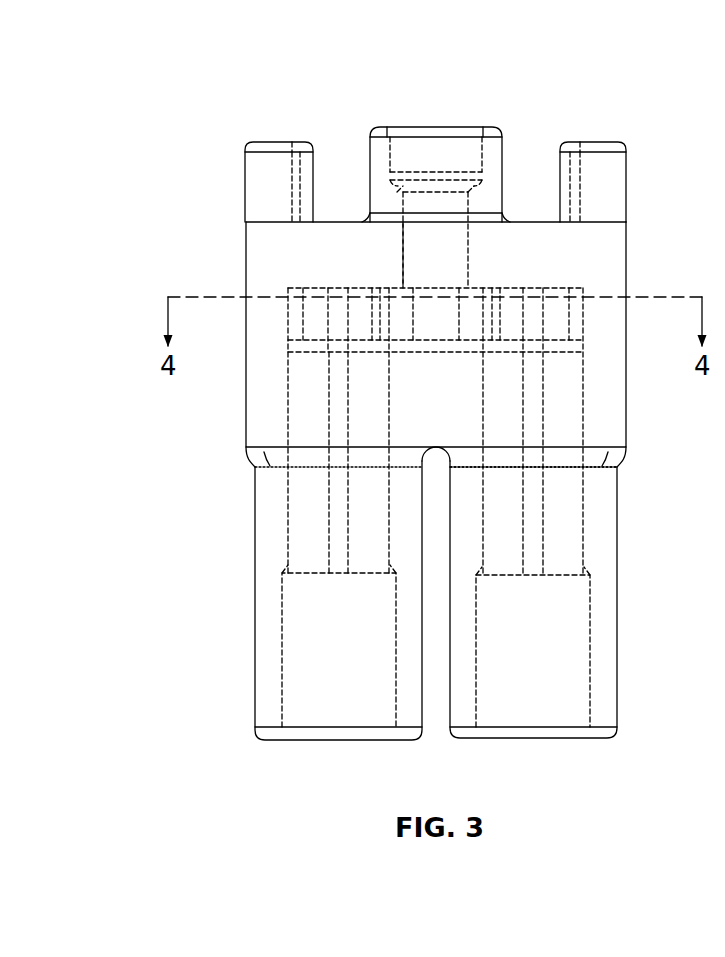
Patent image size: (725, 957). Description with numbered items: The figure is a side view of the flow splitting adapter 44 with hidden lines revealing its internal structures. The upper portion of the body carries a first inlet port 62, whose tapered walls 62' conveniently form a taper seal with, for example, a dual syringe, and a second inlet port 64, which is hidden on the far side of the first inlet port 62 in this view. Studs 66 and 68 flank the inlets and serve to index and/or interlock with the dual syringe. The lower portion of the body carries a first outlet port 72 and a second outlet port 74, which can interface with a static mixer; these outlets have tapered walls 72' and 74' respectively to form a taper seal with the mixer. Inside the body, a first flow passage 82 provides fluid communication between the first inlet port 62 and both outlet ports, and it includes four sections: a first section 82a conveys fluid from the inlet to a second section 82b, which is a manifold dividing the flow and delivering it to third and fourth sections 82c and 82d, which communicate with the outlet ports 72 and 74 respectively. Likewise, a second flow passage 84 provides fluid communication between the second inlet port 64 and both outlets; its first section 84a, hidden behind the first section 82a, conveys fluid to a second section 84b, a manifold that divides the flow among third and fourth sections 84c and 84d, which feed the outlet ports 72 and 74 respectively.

The flow splitting adapter 44 is at (650, 685).
The first inlet port 62 is at (425, 158).
The tapered walls 62' is at (436, 140).
The second inlet port 64 is at (493, 172).
The stud 66 is at (283, 142).
The stud 68 is at (598, 141).
The first outlet port 72 is at (338, 620).
The tapered walls 72' is at (339, 678).
The second outlet port 74 is at (536, 620).
The tapered walls 74' is at (532, 679).
The first flow passage 82 is at (474, 250).
The first section 82a is at (402, 243).
The second section 82b is at (308, 315).
The third section 82c is at (302, 550).
The fourth section 82d is at (503, 550).
The second flow passage 84 is at (592, 487).
The first section 84a is at (470, 230).
The second section 84b is at (565, 310).
The third section 84c is at (370, 555).
The fourth section 84d is at (575, 548).